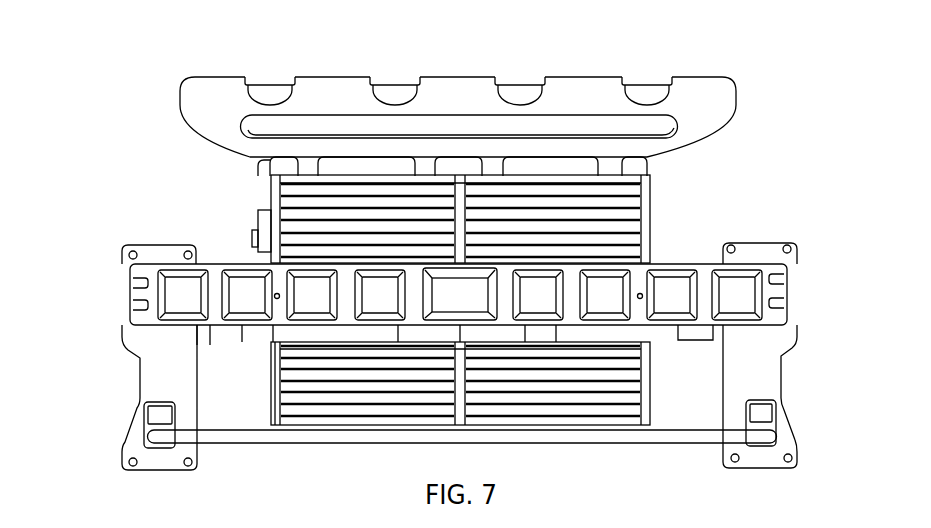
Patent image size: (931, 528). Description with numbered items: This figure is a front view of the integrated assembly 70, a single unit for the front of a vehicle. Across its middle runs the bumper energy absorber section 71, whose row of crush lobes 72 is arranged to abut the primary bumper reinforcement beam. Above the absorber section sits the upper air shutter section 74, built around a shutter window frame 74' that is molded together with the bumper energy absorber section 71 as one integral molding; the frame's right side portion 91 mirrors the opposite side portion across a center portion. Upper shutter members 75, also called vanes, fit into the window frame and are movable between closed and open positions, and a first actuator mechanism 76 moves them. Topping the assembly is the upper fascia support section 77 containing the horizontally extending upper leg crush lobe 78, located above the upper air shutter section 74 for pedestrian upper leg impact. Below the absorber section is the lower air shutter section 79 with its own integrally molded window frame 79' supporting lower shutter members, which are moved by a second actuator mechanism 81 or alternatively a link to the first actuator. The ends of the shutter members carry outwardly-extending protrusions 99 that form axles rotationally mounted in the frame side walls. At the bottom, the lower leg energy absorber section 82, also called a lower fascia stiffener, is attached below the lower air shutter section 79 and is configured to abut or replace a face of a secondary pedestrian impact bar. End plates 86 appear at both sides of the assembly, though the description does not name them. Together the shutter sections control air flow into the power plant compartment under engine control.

The integrated assembly 70 is at (128, 51).
The bumper energy absorber section 71 is at (748, 261).
The crush lobes 72 is at (175, 305).
The upper air shutter section 74 is at (244, 216).
The shutter window frame 74' is at (238, 167).
The upper shutter members 75 is at (628, 203).
The first actuator mechanism 76 is at (462, 138).
The upper fascia support section 77 is at (757, 75).
The upper leg crush lobe 78 is at (583, 125).
The lower air shutter section 79 is at (433, 383).
The window frame 79' is at (268, 422).
The second actuator mechanism 81 is at (460, 417).
The lower leg energy absorber section 82 is at (697, 442).
The end plates 86 is at (122, 273).
The right side portion 91 is at (661, 176).
The outwardly-extending protrusions 99 is at (640, 367).